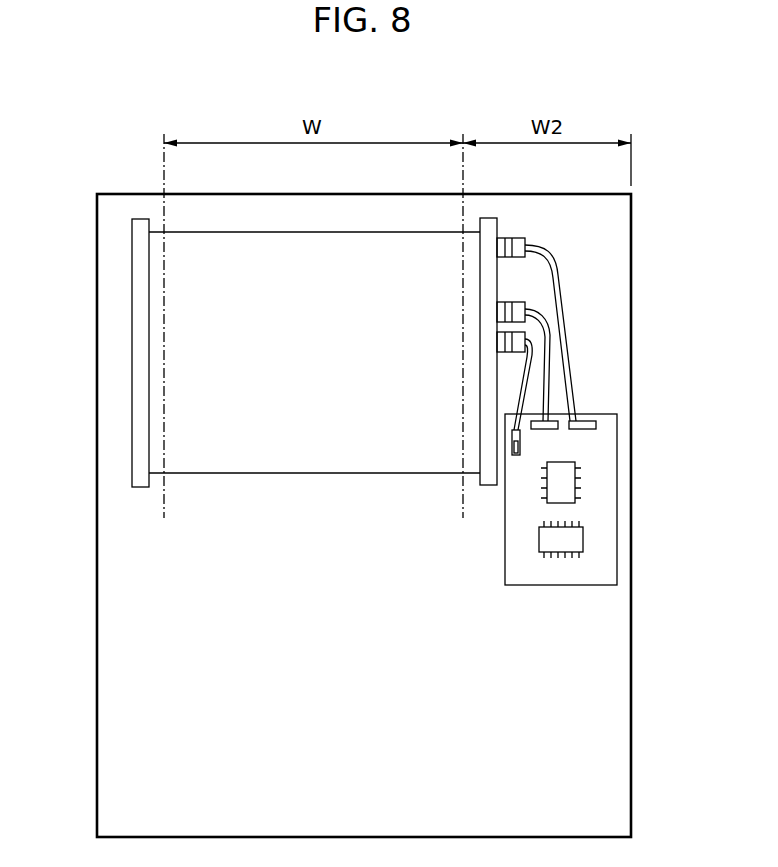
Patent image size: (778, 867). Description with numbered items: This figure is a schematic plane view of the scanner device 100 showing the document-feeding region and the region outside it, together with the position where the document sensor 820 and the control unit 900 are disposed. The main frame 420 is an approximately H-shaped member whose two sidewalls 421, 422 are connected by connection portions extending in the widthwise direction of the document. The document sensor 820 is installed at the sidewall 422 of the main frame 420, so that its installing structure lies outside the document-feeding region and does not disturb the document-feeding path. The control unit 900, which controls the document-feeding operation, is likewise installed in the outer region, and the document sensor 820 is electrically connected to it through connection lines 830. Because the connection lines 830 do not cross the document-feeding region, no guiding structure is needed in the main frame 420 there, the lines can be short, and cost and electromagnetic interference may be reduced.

The scanner device 100 is at (631, 671).
The main frame 420 is at (267, 392).
The sidewall 421 is at (145, 488).
The sidewall 422 is at (488, 487).
The document sensor 820 is at (528, 338).
The connection lines 830 is at (519, 403).
The control unit 900 is at (617, 507).